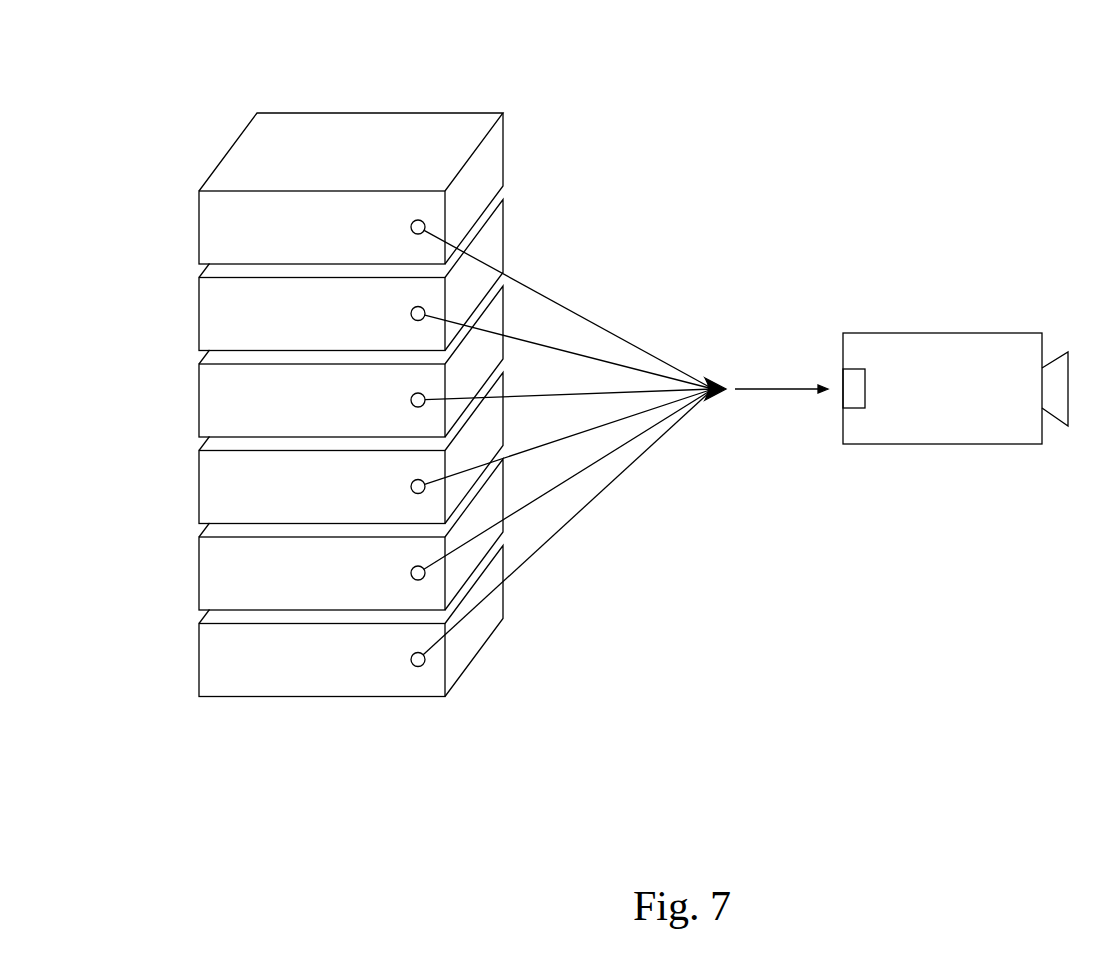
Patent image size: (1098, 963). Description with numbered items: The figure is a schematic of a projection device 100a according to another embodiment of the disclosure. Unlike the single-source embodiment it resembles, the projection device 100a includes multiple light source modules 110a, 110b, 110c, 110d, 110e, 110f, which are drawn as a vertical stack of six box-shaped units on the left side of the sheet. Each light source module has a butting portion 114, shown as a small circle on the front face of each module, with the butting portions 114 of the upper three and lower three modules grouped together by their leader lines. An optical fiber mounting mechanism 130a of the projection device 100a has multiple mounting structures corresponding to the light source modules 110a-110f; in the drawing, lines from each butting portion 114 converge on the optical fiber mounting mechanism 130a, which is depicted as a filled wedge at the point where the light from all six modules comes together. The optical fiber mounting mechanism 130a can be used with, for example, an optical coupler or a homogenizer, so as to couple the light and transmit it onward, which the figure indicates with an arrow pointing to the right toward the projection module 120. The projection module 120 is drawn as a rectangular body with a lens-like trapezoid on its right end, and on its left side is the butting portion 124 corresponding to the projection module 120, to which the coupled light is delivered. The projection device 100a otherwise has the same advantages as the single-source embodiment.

The projection device 100a is at (98, 37).
The light source module 110a is at (205, 231).
The light source module 110b is at (205, 318).
The light source module 110c is at (205, 404).
The light source module 110d is at (205, 490).
The light source module 110e is at (205, 577).
The light source module 110f is at (205, 664).
The butting portion 114 is at (410, 398).
The optical fiber mounting mechanism 130a is at (720, 367).
The projection module 120 is at (940, 415).
The butting portion 124 is at (855, 373).